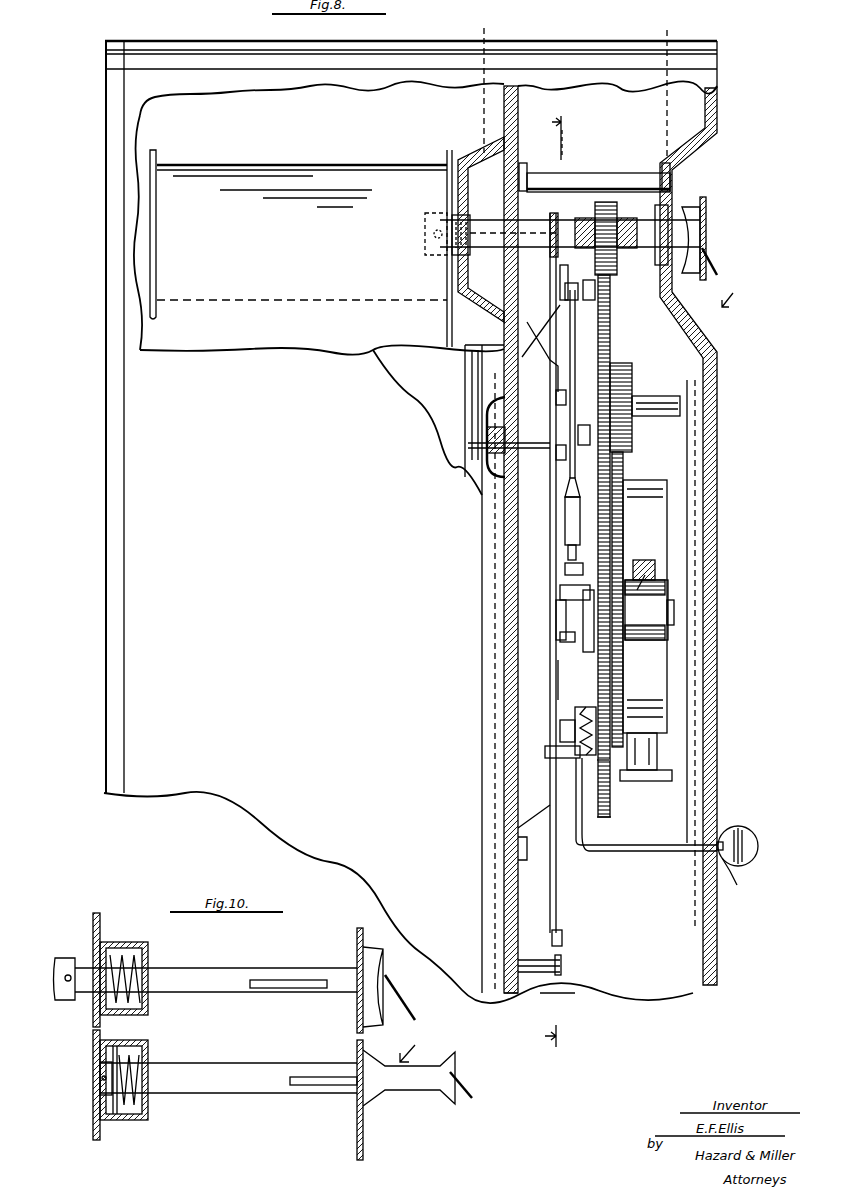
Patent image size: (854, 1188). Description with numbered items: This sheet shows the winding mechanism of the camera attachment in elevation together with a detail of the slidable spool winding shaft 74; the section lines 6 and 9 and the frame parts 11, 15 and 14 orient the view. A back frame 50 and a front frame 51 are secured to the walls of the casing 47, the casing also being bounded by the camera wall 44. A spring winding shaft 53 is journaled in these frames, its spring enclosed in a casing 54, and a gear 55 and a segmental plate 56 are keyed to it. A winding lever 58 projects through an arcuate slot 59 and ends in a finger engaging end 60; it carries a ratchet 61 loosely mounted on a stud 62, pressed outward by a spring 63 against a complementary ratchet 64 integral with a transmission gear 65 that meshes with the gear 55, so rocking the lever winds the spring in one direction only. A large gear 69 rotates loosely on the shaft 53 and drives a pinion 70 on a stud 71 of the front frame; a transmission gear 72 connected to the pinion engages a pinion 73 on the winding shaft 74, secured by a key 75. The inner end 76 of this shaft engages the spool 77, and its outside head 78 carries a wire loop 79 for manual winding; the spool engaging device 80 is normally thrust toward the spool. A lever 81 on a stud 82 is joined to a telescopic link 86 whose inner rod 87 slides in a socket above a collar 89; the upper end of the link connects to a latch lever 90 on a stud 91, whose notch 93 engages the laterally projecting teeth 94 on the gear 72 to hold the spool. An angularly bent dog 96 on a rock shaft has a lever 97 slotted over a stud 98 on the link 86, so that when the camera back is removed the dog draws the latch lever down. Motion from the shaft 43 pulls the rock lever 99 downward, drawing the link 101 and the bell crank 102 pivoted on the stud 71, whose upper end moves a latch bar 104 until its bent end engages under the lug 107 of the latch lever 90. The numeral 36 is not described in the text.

In FIG. 8, the frame side plate 11 is at (125, 72).
In FIG. 8, the partition plate 15 is at (478, 776).
In FIG. 8, the section line 9 is at (675, 42).
In FIG. 8, the section line 6 is at (547, 581).
In FIG. 8, the spool 77 is at (285, 175).
In FIG. 8, the inner end 76 is at (428, 213).
In FIG. 10, the inner end 76 is at (68, 998).
In FIG. 8, the spool engaging device 80 is at (432, 252).
In FIG. 10, the spool engaging device 80 is at (66, 962).
In FIG. 8, the sliding spool winding shaft 74 is at (485, 250).
In FIG. 10, the sliding spool winding shaft 74 is at (183, 972).
In FIG. 8, the pinion 73 is at (587, 220).
In FIG. 8, the head 78 is at (707, 220).
In FIG. 10, the head 78 is at (390, 985).
In FIG. 8, the wire loop 79 is at (708, 233).
In FIG. 10, the wire loop 79 is at (135, 950).
In FIG. 8, the casing 14 is at (738, 291).
In FIG. 10, the casing 14 is at (415, 1046).
In FIG. 8, the lug 107 is at (560, 270).
In FIG. 8, the latch bar 104 is at (578, 285).
In FIG. 8, the latch lever 90 is at (565, 290).
In FIG. 8, the stud 91 is at (541, 348).
In FIG. 8, the transmission gear 72 is at (611, 325).
In FIG. 8, the stud 71 is at (651, 403).
In FIG. 8, the pinion 70 is at (633, 430).
In FIG. 8, the large gear 69 is at (625, 480).
In FIG. 8, the bell crank 102 is at (557, 395).
In FIG. 8, the angularly bent dog 96 is at (470, 393).
In FIG. 8, the stud 98 is at (585, 435).
In FIG. 8, the lever 97 is at (560, 451).
In FIG. 8, the laterally projecting teeth 94 is at (570, 470).
In FIG. 8, the inner rod 87 is at (570, 508).
In FIG. 8, the telescopic link 86 is at (568, 527).
In FIG. 8, the collar 89 is at (574, 574).
In FIG. 8, the notch 93 is at (563, 595).
In FIG. 8, the lever 81 is at (560, 614).
In FIG. 8, the stud 82 is at (566, 635).
In FIG. 8, the block 36 is at (590, 640).
In FIG. 8, the gear 55 is at (612, 610).
In FIG. 8, the segmental plate 56 is at (650, 575).
In FIG. 8, the spring winding shaft 53 is at (667, 630).
In FIG. 8, the casing 54 is at (652, 688).
In FIG. 8, the front frame 51 is at (678, 735).
In FIG. 8, the back frame 50 is at (558, 680).
In FIG. 8, the spring 63 is at (575, 718).
In FIG. 8, the stud 62 is at (560, 731).
In FIG. 8, the ratchet 61 is at (555, 749).
In FIG. 8, the complementary ratchet 64 is at (606, 778).
In FIG. 8, the transmission gear 65 is at (610, 812).
In FIG. 8, the winding lever 58 is at (640, 852).
In FIG. 8, the arcuate slot 59 is at (737, 874).
In FIG. 8, the finger engaging end 60 is at (759, 845).
In FIG. 8, the link 101 is at (557, 868).
In FIG. 8, the rock lever 99 is at (560, 960).
In FIG. 8, the casing 47 is at (719, 968).
In FIG. 10, the casing 47 is at (365, 1158).
In FIG. 8, the wall 44 is at (506, 992).
In FIG. 8, the shaft 43 is at (557, 993).
In FIG. 10, the key 75 is at (273, 980).